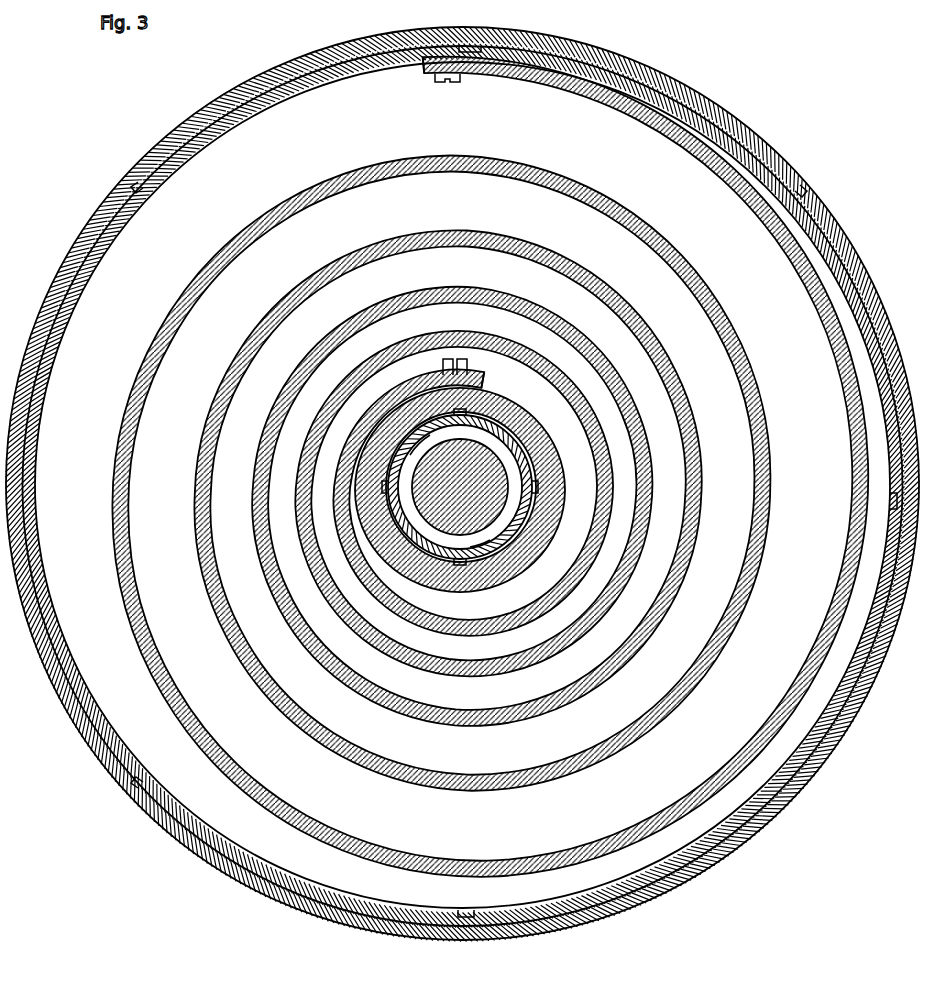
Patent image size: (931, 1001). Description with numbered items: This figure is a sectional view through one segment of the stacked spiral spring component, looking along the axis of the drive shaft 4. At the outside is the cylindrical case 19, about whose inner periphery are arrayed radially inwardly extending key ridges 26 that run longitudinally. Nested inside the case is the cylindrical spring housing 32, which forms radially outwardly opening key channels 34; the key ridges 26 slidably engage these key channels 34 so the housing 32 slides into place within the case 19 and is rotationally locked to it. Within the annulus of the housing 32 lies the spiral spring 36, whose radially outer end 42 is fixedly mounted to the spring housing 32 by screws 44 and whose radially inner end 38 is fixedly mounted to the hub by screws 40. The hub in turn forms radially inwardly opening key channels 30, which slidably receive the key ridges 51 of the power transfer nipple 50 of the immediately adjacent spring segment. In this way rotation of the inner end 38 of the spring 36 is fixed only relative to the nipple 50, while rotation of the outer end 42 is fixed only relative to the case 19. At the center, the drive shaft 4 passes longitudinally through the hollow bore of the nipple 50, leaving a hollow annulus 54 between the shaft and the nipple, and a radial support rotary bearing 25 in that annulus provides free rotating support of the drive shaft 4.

The drive shaft 4 is at (454, 489).
The cylindrical case 19 is at (625, 62).
The radial support rotary bearing 25 is at (547, 522).
The key ridges 26 is at (805, 193).
The key channels 30 is at (527, 423).
The spring housing 32 is at (40, 600).
The key channels 34 is at (148, 198).
The spiral spring 36 is at (200, 575).
The radially inner end 38 is at (484, 376).
The screws 40 is at (443, 361).
The radially outer end 42 is at (428, 72).
The screws 44 is at (455, 82).
The power transfer nipple 50 is at (404, 440).
The key ridges 51 is at (410, 437).
The annulus 54 is at (478, 442).